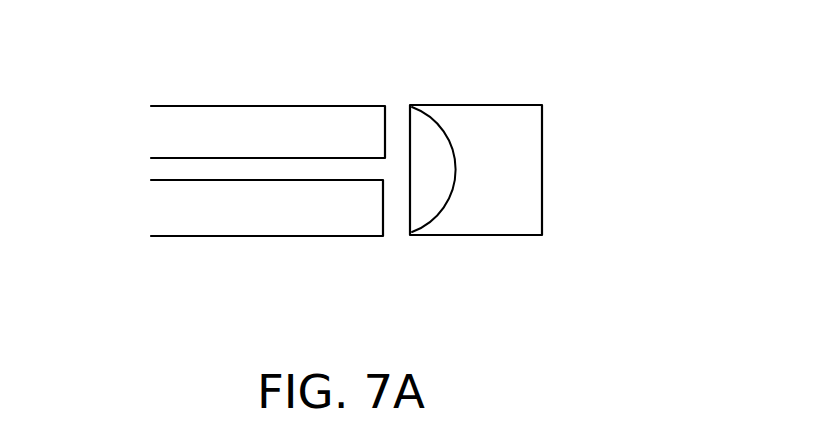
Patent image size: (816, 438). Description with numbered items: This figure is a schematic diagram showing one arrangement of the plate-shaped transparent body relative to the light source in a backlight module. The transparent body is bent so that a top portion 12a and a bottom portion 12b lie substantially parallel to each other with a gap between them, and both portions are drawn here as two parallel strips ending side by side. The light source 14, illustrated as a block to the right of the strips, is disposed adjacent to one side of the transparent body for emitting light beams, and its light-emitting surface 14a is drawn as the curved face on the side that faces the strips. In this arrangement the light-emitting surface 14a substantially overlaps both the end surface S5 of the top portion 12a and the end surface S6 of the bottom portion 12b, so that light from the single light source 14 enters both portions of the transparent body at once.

The top portion 12a is at (212, 117).
The bottom portion 12b is at (203, 223).
The light source 14 is at (543, 135).
The light-emitting surface 14a is at (412, 232).
The end surface of the top portion S5 is at (386, 132).
The end surface of the bottom portion S6 is at (388, 198).